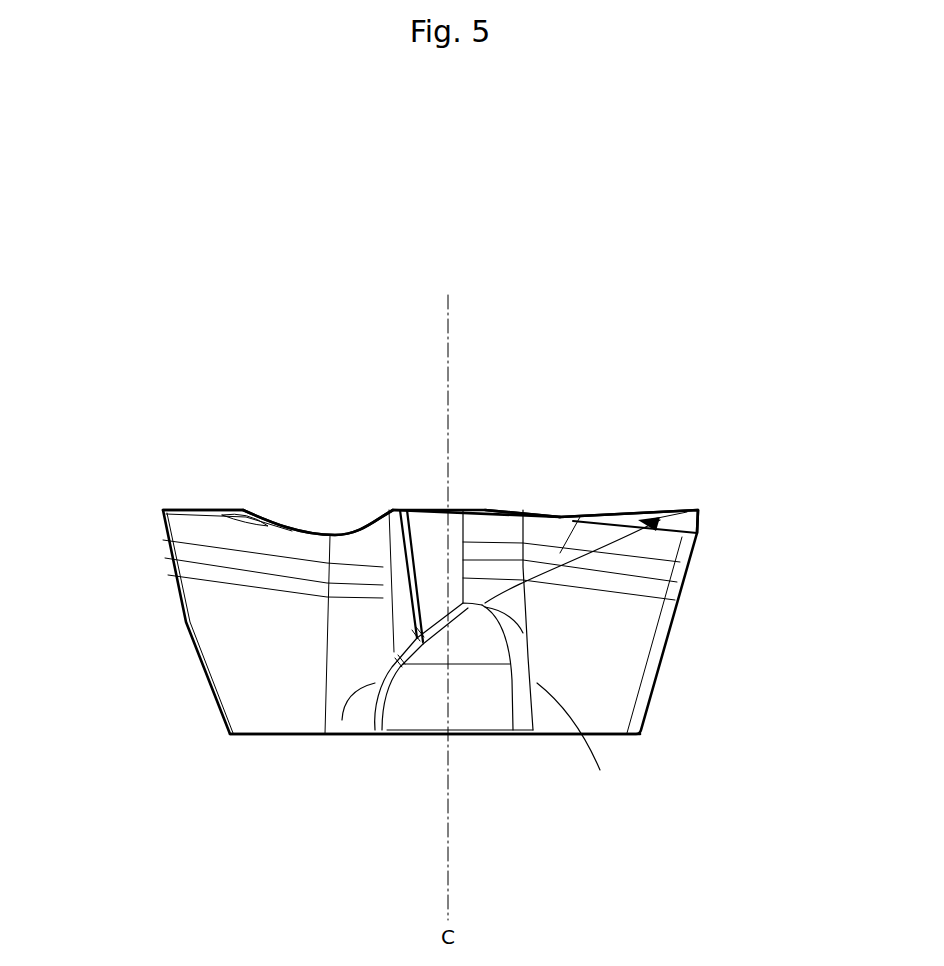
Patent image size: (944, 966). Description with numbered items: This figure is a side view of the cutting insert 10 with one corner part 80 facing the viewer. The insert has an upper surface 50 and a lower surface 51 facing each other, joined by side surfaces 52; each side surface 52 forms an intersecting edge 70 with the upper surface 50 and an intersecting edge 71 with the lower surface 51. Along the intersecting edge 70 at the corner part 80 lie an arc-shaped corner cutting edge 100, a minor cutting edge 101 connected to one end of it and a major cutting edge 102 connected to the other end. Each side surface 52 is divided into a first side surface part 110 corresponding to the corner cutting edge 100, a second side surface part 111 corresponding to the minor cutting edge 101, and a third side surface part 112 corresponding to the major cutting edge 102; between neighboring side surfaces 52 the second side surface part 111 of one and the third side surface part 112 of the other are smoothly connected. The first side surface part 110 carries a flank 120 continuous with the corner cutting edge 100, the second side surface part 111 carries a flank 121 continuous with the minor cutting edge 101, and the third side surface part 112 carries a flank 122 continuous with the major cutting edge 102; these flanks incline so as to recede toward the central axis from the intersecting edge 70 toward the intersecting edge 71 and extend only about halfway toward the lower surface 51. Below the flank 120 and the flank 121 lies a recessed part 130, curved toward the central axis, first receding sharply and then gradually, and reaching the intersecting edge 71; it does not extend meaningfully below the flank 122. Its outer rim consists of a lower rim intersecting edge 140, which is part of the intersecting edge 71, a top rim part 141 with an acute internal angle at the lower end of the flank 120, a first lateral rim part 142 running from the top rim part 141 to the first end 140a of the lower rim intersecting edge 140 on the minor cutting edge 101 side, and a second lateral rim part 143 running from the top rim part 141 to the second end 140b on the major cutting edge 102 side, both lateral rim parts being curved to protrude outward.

The cutting insert 10 is at (310, 389).
The upper surface 50 is at (313, 528).
The lower surface 51 is at (617, 737).
The side surface 52 is at (655, 373).
The intersecting edge 70 is at (455, 505).
The intersecting edge 71 is at (492, 735).
The corner part 80 is at (163, 510).
The corner cutting edge 100 is at (492, 513).
The minor cutting edge 101 is at (422, 507).
The major cutting edge 102 is at (571, 517).
The first side surface part 110 is at (502, 513).
The second side surface part 111 is at (393, 507).
The third side surface part 112 is at (227, 540).
The flank 120 is at (518, 513).
The flank 121 is at (432, 513).
The flank 122 is at (580, 517).
The recessed part 130 is at (540, 709).
The lower rim intersecting edge 140 is at (444, 732).
The first end 140a is at (382, 730).
The second end 140b is at (533, 730).
The top rim part 141 is at (652, 522).
The first lateral rim part 142 is at (342, 720).
The second lateral rim part 143 is at (600, 770).